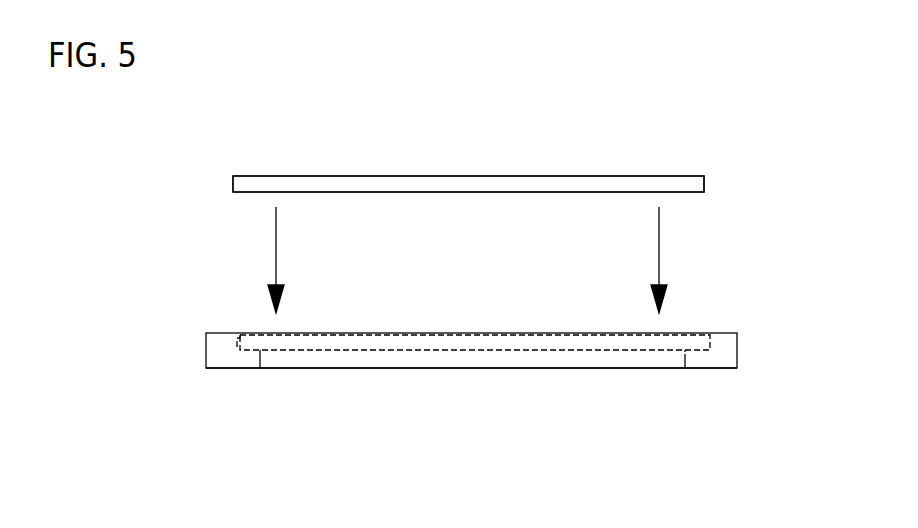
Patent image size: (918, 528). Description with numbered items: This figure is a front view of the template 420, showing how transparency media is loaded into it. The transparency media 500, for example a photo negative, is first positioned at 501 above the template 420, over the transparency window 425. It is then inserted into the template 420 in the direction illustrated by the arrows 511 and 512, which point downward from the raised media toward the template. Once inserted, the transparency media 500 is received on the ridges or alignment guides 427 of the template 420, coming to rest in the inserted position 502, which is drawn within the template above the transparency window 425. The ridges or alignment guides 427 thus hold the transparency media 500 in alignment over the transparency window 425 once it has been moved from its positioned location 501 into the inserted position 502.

The transparency media 500 is at (628, 161).
The positioned location of transparency media 501 is at (432, 177).
The inserted position 502 is at (412, 334).
The arrow 511 is at (276, 232).
The arrow 512 is at (659, 233).
The template 420 is at (205, 355).
The transparency window 425 is at (388, 381).
The ridges or alignment guides 427 is at (260, 352).